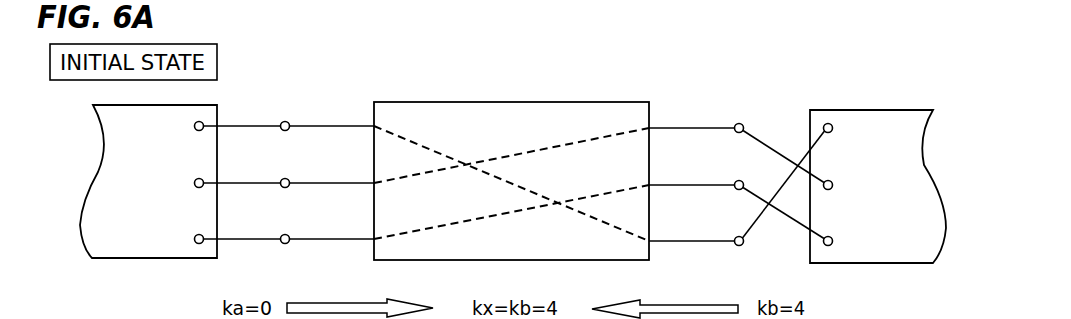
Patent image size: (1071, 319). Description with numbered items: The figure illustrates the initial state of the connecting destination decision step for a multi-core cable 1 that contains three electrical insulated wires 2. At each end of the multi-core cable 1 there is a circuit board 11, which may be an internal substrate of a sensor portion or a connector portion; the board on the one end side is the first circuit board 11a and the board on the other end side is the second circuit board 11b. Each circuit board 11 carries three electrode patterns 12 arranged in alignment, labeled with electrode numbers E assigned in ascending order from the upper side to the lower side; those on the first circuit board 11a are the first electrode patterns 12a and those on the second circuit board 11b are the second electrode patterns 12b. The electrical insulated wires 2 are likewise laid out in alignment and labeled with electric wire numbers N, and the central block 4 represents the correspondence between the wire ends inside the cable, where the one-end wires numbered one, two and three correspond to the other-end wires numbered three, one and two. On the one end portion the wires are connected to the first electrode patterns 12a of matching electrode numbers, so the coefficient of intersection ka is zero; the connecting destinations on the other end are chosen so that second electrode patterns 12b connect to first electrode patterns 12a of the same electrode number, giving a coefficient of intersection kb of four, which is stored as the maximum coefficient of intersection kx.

The multi-core cable 1 is at (632, 93).
The electrical insulated wire 2 is at (350, 182).
The switching unit 4 is at (578, 110).
The circuit board 11 is at (97, 135).
The first circuit board 11a is at (83, 240).
The second circuit board 11b is at (927, 108).
The electrode pattern 12 is at (192, 250).
The first electrode pattern 12a is at (206, 243).
The second electrode pattern 12b is at (822, 246).